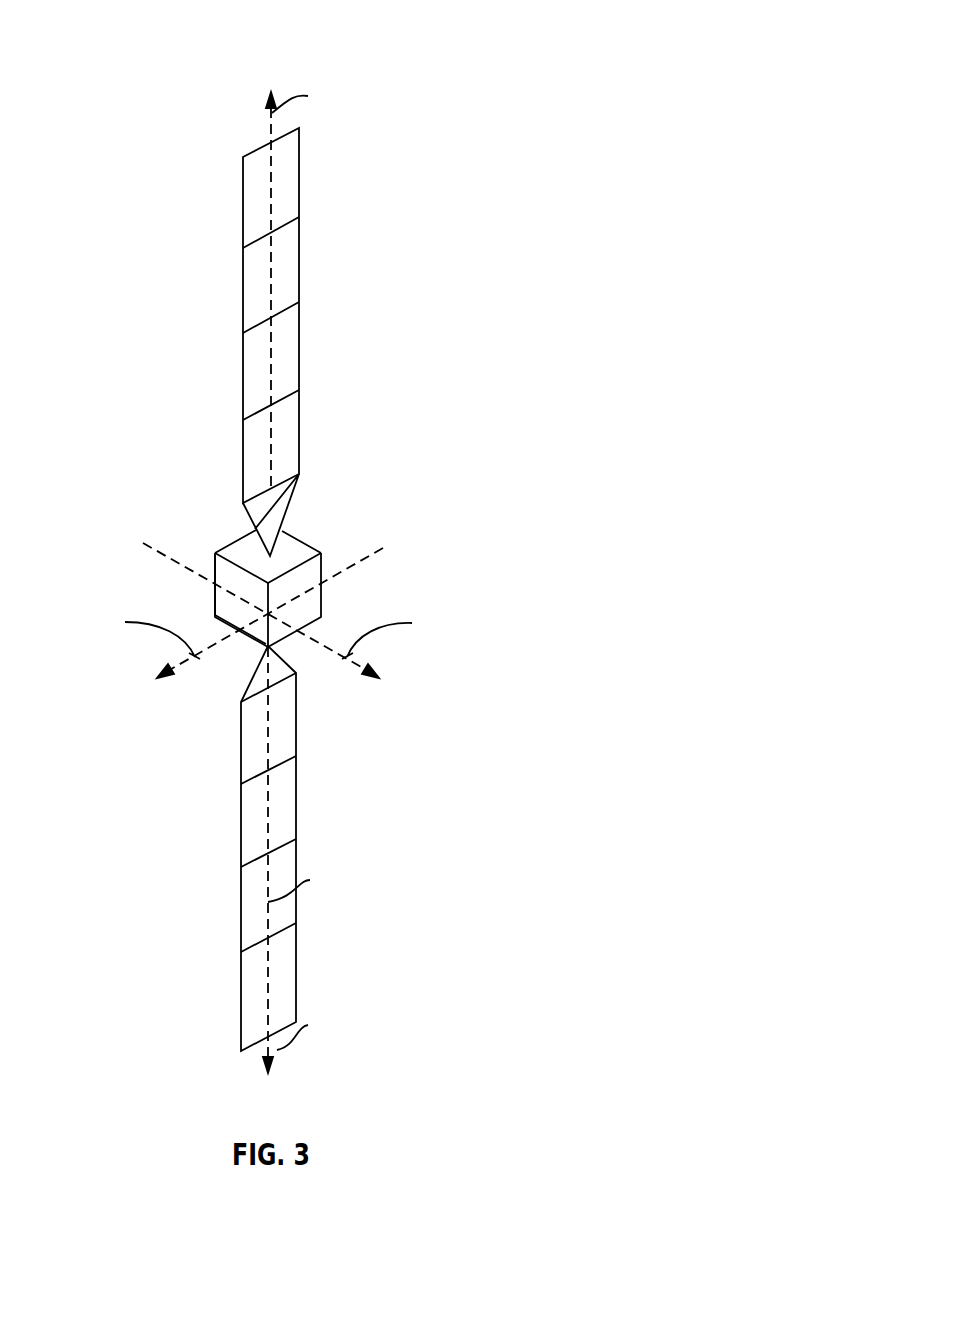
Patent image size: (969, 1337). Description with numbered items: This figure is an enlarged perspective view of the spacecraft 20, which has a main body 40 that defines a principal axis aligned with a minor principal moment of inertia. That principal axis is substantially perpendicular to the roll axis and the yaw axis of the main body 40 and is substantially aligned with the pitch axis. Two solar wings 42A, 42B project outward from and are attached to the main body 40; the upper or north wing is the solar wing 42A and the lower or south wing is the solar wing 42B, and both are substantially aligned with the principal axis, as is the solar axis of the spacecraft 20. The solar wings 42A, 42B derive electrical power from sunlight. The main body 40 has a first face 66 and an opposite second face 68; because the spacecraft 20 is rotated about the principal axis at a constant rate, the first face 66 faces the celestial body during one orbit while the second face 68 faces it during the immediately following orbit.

The spacecraft 20 is at (555, 36).
The main body 40 is at (298, 608).
The solar wing 42A is at (282, 263).
The solar wing 42B is at (282, 807).
The first face 66 is at (228, 608).
The second face 68 is at (298, 537).